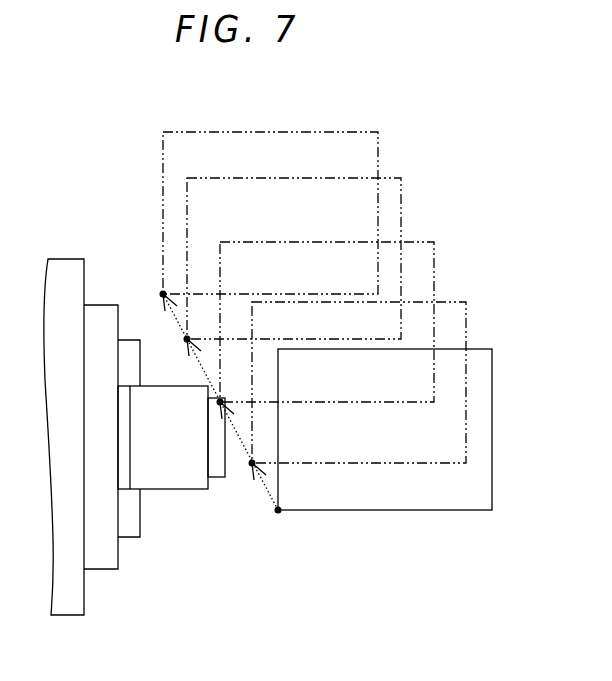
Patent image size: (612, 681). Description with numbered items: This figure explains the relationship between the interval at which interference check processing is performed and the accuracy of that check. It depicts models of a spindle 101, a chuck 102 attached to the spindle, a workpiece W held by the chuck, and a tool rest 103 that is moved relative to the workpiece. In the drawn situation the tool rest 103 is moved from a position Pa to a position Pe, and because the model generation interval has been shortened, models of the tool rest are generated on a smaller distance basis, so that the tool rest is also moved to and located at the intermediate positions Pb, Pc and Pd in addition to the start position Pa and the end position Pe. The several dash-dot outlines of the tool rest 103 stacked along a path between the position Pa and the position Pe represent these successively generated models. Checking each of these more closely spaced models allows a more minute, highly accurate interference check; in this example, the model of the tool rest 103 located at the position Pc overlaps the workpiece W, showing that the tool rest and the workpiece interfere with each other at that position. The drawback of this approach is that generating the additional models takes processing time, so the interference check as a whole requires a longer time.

The spindle 101 is at (66, 259).
The chuck 102 is at (102, 305).
The tool rest 103 is at (378, 150).
The workpiece W is at (167, 489).
The position Pa is at (264, 510).
The position Pb is at (249, 475).
The position Pc is at (232, 396).
The position Pd is at (179, 341).
The position Pe is at (156, 296).